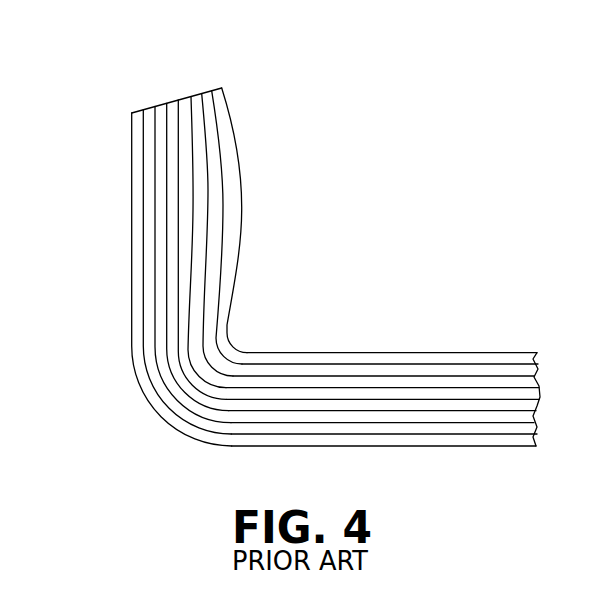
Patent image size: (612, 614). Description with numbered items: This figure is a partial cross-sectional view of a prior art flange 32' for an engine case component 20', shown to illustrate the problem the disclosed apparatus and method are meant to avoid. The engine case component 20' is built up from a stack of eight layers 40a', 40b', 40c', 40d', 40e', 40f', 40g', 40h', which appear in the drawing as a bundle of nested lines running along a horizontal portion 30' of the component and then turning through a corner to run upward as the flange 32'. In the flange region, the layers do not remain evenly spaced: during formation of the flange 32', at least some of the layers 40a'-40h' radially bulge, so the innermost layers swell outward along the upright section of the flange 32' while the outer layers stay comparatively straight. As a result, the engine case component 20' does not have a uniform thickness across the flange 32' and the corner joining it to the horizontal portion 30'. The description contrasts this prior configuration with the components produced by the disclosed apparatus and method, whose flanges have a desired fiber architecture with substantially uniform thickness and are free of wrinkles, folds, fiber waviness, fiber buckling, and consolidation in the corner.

The engine case component 20' is at (291, 230).
The flat ribbon cable 30' is at (383, 365).
The flange 32' is at (189, 230).
The layer 40a' is at (252, 204).
The layer 40b' is at (219, 198).
The layer 40c' is at (191, 201).
The layer 40d' is at (181, 222).
The layer 40e' is at (154, 227).
The layer 40f' is at (164, 246).
The layer 40g' is at (137, 256).
The layer 40h' is at (142, 267).